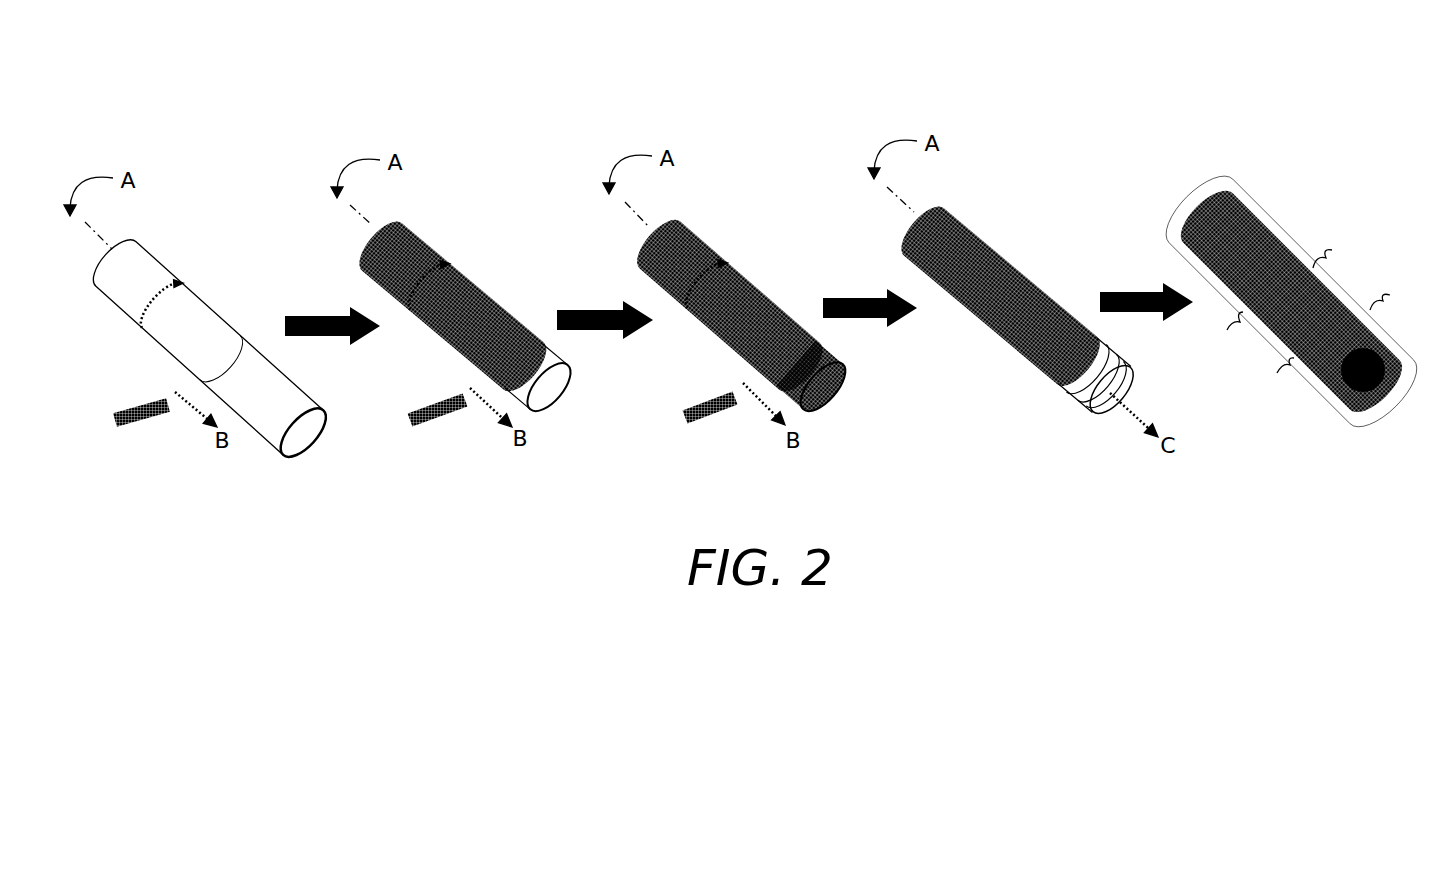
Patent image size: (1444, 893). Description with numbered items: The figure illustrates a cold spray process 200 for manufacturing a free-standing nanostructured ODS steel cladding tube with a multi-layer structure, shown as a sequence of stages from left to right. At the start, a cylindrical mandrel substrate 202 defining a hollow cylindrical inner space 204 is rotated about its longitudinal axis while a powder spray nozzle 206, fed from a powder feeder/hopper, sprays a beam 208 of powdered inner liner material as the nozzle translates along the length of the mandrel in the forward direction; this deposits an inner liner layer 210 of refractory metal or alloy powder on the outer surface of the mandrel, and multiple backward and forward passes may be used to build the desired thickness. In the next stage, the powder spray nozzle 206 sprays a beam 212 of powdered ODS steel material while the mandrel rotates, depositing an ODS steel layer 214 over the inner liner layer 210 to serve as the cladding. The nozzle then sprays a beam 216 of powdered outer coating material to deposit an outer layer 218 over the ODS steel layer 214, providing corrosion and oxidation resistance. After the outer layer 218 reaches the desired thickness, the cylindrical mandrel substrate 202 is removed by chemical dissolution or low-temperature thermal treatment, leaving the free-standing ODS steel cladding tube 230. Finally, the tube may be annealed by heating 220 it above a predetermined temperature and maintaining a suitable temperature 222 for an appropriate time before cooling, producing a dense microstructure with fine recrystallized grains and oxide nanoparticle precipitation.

The cold spray process 200 is at (631, 98).
The cylindrical mandrel substrate 202 is at (257, 422).
The hollow cylindrical inner space 204 is at (300, 432).
The powder spray nozzle 206 is at (157, 422).
The beam of powdered inner liner material 208 is at (195, 390).
The inner liner layer 210 is at (128, 265).
The beam of powdered ODS steel material 212 is at (487, 388).
The ODS steel layer 214 is at (405, 242).
The beam of powdered outer coating material 216 is at (760, 387).
The outer layer 218 is at (680, 240).
The heating 220 is at (1318, 258).
The suitable temperature 222 is at (1203, 208).
The free-standing ODS steel cladding tube 230 is at (1273, 296).